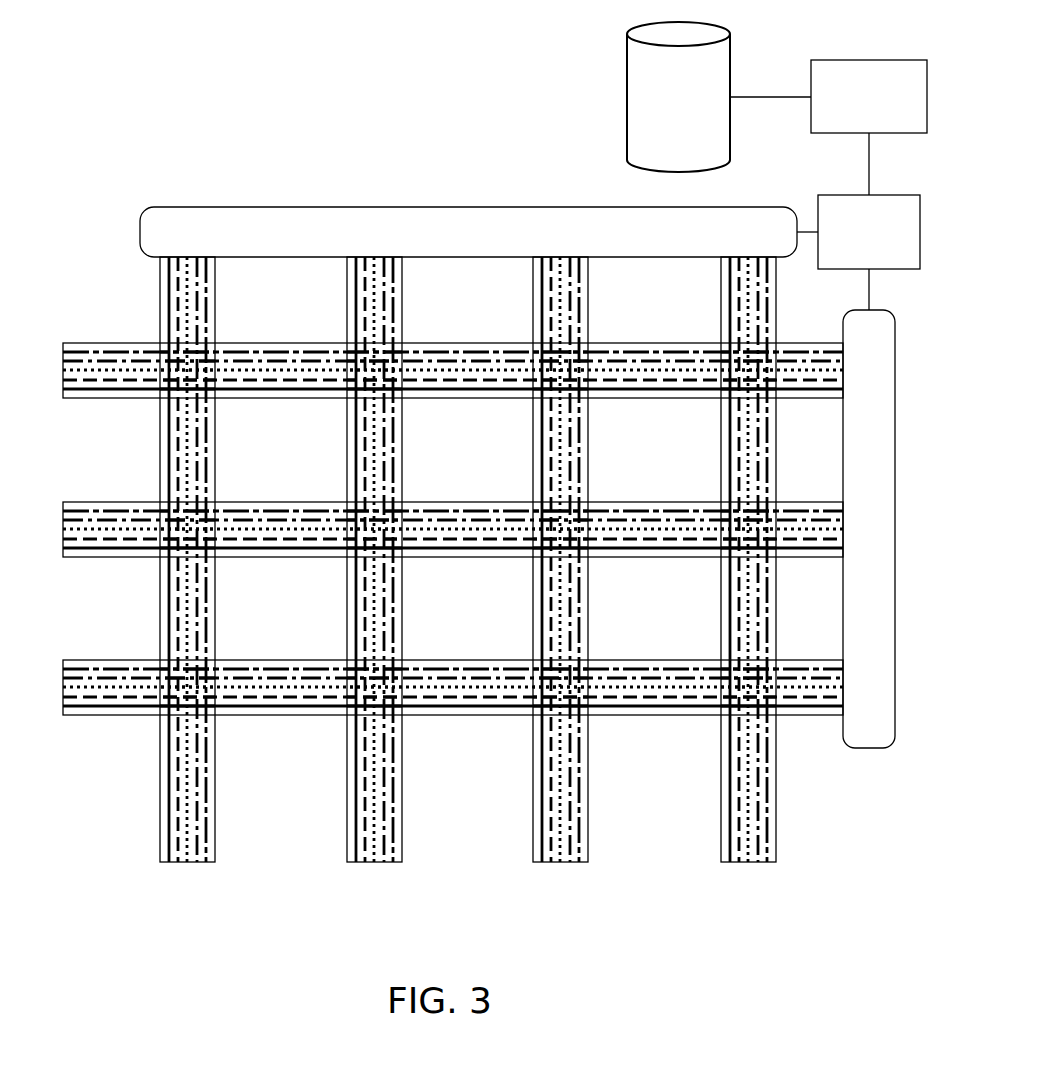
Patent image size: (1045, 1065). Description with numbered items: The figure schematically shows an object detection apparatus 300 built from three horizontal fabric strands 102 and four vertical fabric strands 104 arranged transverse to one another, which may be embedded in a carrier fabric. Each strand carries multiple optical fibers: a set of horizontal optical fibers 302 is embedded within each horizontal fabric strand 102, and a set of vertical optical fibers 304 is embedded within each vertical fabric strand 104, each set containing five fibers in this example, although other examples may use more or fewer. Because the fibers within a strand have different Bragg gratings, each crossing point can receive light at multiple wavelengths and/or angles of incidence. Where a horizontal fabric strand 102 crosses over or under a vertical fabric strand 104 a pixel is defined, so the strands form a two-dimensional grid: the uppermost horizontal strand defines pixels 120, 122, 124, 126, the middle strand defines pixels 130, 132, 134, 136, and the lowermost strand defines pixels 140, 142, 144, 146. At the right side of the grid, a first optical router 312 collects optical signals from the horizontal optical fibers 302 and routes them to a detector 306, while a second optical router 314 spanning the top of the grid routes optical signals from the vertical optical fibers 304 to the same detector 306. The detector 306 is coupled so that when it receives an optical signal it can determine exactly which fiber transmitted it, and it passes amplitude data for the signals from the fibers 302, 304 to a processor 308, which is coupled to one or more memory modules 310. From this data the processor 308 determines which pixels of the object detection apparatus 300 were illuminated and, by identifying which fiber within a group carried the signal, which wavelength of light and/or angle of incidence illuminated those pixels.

The object detection apparatus 300 is at (184, 134).
The horizontal optical fibers 302 is at (430, 530).
The horizontal fabric strands 102 is at (435, 553).
The vertical optical fibers 304 is at (478, 608).
The vertical fabric strands 104 is at (459, 589).
The detector 306 is at (897, 195).
The processor 308 is at (870, 60).
The memory modules 310 is at (627, 97).
The first optical router 312 is at (868, 748).
The second optical router 314 is at (468, 207).
The pixel 120 is at (159, 390).
The pixel 122 is at (346, 390).
The pixel 124 is at (533, 390).
The pixel 126 is at (719, 390).
The pixel 130 is at (159, 548).
The pixel 132 is at (346, 548).
The pixel 134 is at (533, 548).
The pixel 136 is at (719, 548).
The pixel 140 is at (159, 707).
The pixel 142 is at (346, 707).
The pixel 144 is at (533, 707).
The pixel 146 is at (719, 707).